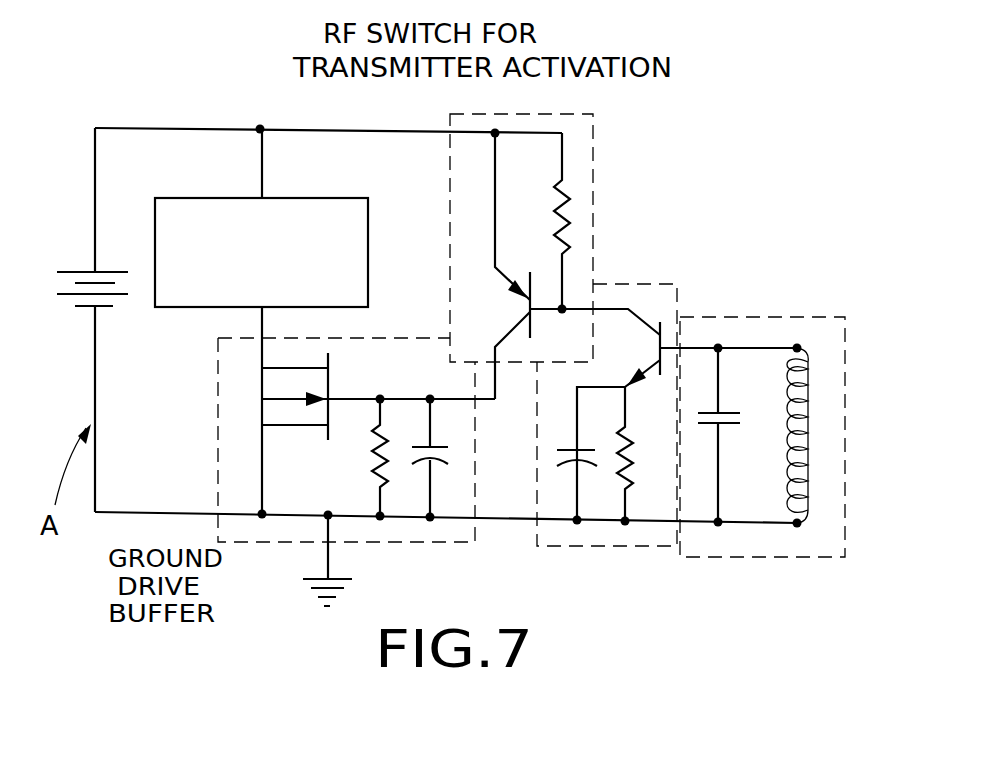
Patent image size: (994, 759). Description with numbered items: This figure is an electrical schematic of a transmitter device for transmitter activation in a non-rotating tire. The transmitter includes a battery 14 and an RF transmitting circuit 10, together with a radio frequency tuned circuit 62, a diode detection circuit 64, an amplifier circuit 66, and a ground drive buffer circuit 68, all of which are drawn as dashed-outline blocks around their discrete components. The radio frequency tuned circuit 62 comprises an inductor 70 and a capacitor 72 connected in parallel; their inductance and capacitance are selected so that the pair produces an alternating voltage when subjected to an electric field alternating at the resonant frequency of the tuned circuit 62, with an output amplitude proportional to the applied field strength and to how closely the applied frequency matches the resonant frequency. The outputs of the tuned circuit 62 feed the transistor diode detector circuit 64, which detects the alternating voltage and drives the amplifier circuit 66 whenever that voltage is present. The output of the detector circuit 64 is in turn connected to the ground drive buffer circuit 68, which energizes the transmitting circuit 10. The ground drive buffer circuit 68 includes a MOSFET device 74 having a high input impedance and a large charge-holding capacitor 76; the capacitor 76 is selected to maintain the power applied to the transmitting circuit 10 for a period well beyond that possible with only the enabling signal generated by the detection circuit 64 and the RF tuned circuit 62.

The RF transmitting circuit 10 is at (165, 210).
The battery 14 is at (72, 306).
The radio frequency tuned circuit 62 is at (826, 318).
The diode detection circuit 64 is at (563, 546).
The amplifier circuit 66 is at (595, 135).
The ground drive buffer circuit 68 is at (402, 543).
The inductor 70 is at (810, 405).
The capacitor 72 is at (758, 392).
The MOSFET device 74 is at (330, 386).
The charge-holding capacitor 76 is at (412, 446).